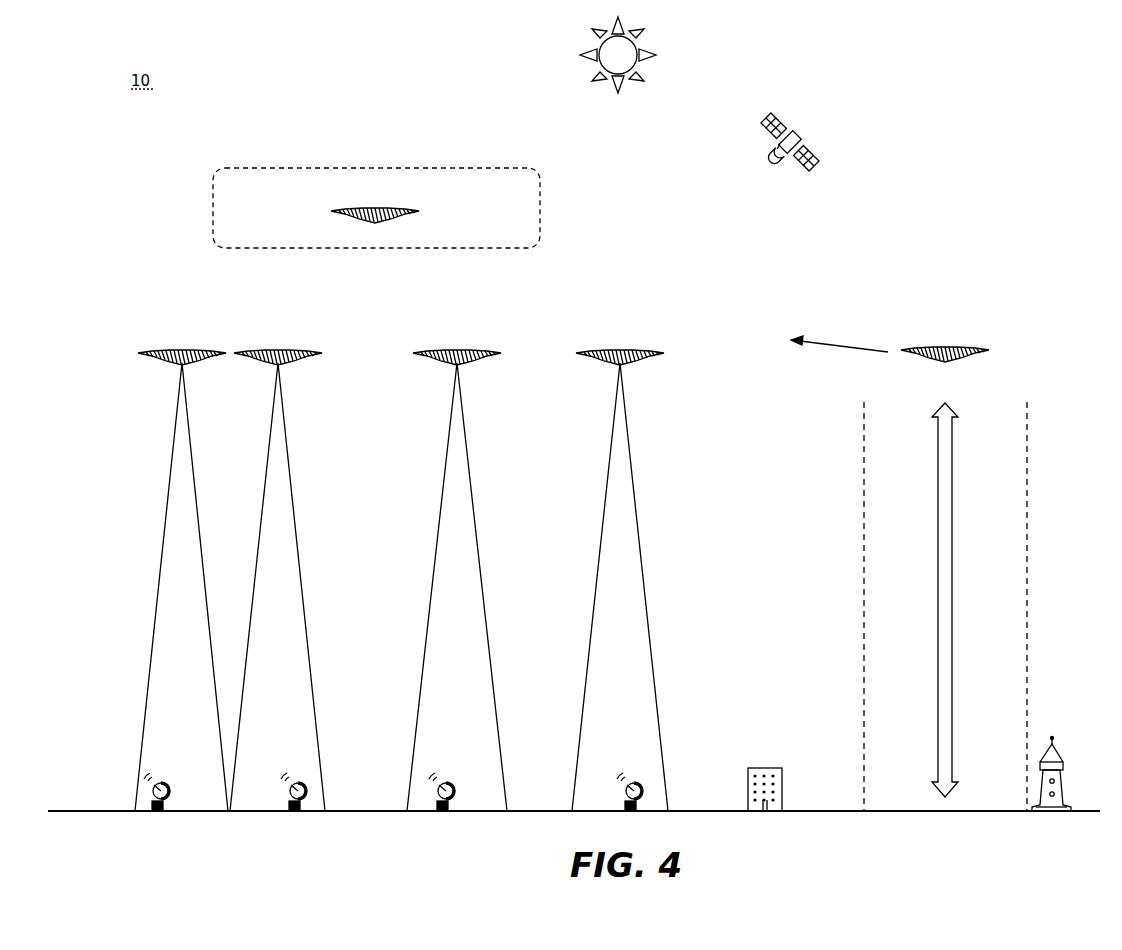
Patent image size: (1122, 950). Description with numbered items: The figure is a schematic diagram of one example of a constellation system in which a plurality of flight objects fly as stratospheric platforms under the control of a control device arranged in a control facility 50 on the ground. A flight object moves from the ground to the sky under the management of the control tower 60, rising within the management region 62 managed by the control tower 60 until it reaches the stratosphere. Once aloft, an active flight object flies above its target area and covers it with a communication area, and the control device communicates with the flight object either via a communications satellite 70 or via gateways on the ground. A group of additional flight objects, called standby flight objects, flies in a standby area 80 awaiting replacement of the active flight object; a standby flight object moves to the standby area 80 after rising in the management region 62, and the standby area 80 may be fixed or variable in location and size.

The control facility 50 is at (766, 766).
The control tower 60 is at (1056, 752).
The management region 62 is at (1027, 433).
The communications satellite 70 is at (793, 126).
The standby area 80 is at (498, 166).